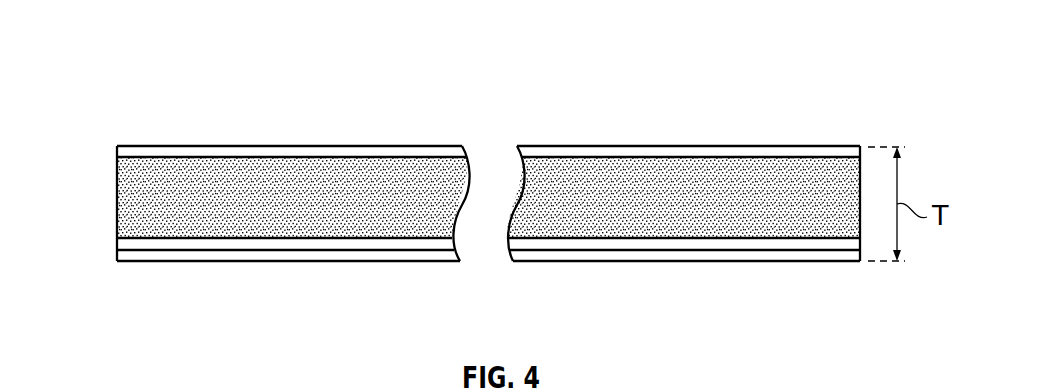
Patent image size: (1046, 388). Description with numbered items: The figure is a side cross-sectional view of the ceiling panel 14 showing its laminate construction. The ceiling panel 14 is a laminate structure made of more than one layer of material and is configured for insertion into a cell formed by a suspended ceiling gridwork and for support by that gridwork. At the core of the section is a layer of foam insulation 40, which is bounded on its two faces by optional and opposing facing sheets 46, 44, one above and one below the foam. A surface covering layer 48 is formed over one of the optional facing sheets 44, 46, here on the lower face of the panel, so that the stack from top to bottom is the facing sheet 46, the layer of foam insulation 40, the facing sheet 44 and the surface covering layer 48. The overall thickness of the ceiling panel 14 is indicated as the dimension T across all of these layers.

The ceiling panel 14 is at (157, 68).
The layer of foam insulation 40 is at (201, 168).
The facing sheet 46 is at (322, 156).
The facing sheet 44 is at (190, 243).
The surface covering layer 48 is at (320, 255).